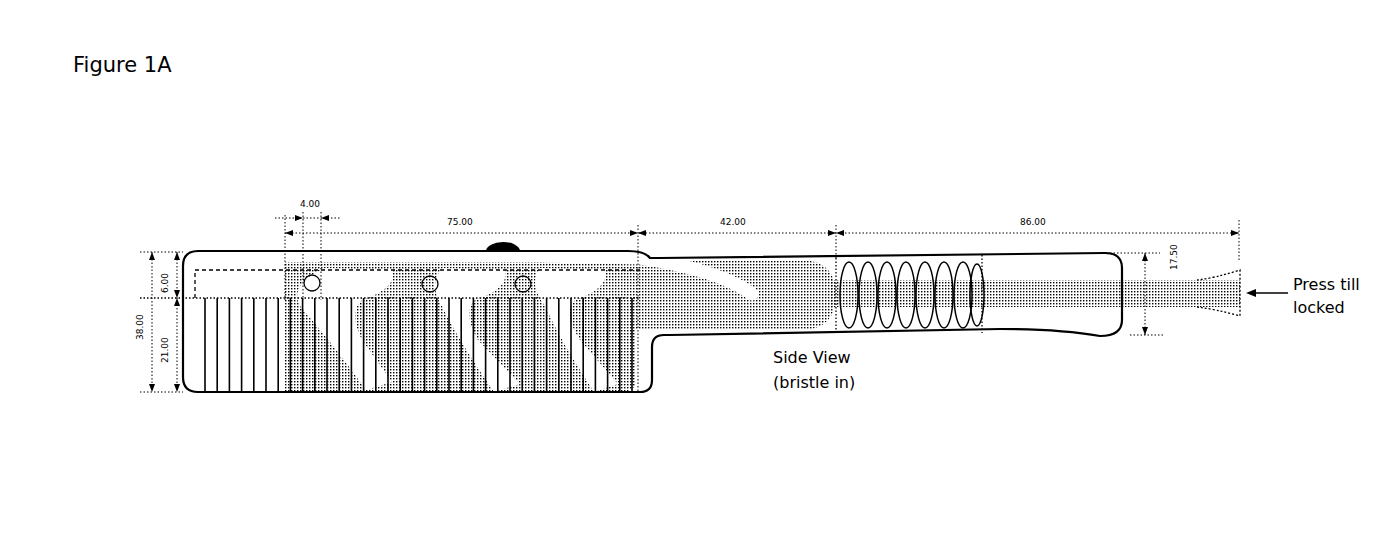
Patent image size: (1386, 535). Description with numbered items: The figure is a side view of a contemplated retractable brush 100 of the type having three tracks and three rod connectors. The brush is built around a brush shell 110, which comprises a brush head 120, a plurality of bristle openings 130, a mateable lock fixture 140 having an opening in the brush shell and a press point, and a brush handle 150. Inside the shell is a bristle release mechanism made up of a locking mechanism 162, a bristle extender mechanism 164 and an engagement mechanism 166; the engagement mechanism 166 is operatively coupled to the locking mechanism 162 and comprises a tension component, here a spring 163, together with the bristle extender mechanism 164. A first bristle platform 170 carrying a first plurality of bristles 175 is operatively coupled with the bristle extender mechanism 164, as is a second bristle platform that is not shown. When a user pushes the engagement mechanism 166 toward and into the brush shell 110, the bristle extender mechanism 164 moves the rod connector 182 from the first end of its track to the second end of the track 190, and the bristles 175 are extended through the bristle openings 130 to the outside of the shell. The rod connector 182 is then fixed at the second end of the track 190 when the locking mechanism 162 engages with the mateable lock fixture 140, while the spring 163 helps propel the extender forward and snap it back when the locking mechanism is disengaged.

The retractable brush 100 is at (1153, 143).
The brush shell 110 is at (772, 243).
The brush head 120 is at (220, 235).
The bristle openings 130 is at (632, 397).
The mateable lock fixture 140 is at (517, 213).
The brush handle 150 is at (997, 333).
The locking mechanism 162 is at (625, 247).
The spring 163 is at (892, 262).
The bristle extender mechanism 164 is at (438, 338).
The engagement mechanism 166 is at (1195, 312).
The first bristle platform 170 is at (395, 280).
The first plurality of bristles 175 is at (265, 383).
The rod connector 182 is at (432, 278).
The second end of the track 190 is at (530, 363).